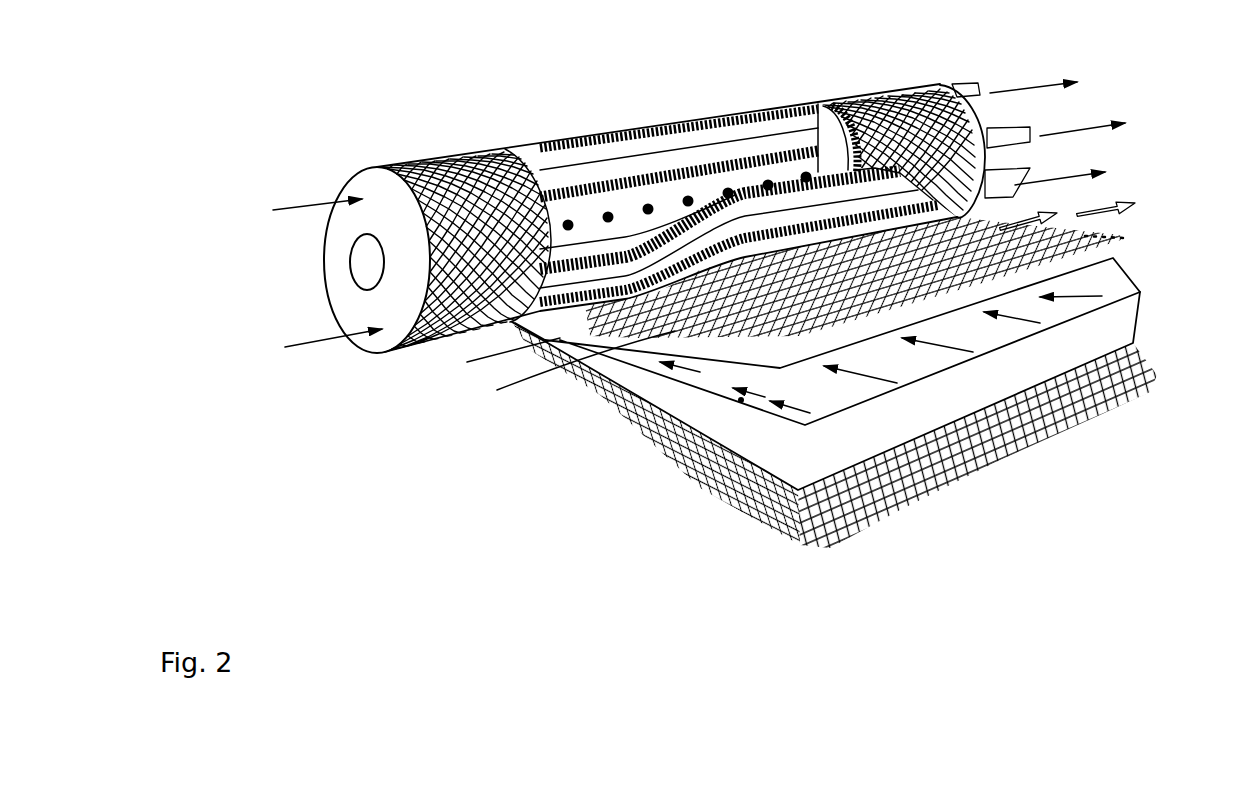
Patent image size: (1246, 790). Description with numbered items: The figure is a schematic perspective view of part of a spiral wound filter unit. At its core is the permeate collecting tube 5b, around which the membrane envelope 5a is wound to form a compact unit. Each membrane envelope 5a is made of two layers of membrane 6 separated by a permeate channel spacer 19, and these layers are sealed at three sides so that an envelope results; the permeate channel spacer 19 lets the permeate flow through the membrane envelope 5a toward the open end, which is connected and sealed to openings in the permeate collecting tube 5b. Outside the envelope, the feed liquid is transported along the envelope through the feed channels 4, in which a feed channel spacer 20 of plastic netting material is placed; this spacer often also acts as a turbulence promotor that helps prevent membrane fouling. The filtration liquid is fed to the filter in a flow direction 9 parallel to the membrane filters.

The feed channel 4 is at (1130, 238).
The membrane envelope 5a is at (763, 396).
The permeate collecting tube 5b is at (700, 192).
The membrane 6 is at (732, 348).
The flow direction 9 is at (303, 207).
The permeate channel spacer 19 is at (741, 401).
The feed channel spacer 20 is at (710, 322).